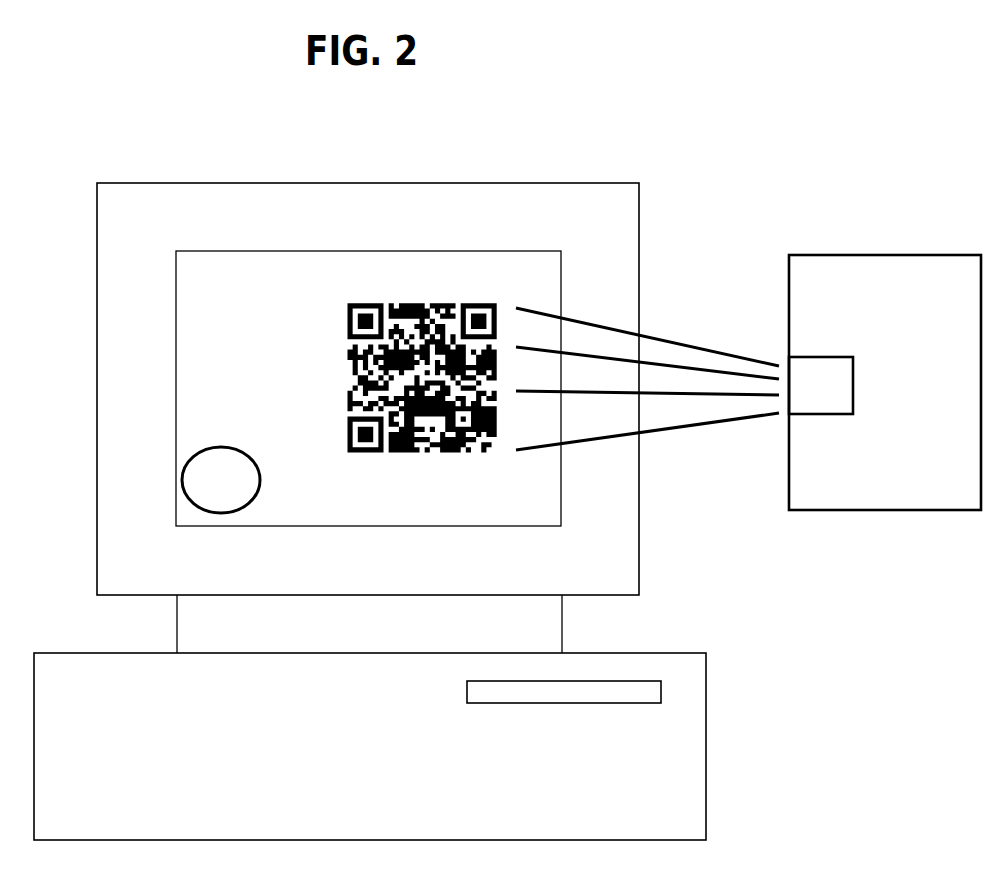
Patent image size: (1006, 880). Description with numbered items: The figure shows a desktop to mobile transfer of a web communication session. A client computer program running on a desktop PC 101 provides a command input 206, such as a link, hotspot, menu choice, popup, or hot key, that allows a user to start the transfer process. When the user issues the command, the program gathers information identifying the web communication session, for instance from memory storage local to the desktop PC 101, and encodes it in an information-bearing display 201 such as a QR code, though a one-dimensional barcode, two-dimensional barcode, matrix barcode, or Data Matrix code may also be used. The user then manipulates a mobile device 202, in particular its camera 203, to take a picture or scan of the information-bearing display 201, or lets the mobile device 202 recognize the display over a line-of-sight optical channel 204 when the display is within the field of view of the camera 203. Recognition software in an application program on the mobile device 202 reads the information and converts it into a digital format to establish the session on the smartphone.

The desktop PC 101 is at (367, 813).
The information-bearing display 201 is at (346, 388).
The mobile device 202 is at (908, 483).
The camera 203 is at (803, 403).
The line-of-sight optical channel 204 is at (665, 340).
The command input 206 is at (202, 492).